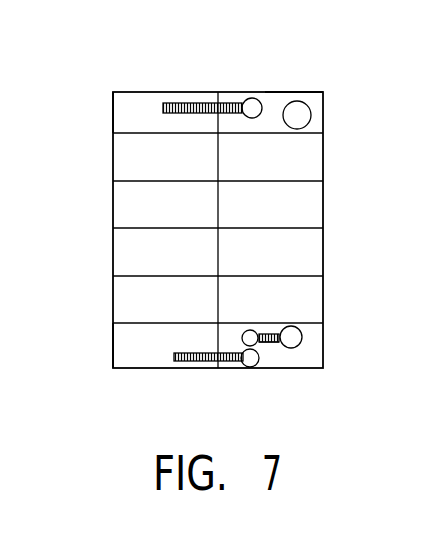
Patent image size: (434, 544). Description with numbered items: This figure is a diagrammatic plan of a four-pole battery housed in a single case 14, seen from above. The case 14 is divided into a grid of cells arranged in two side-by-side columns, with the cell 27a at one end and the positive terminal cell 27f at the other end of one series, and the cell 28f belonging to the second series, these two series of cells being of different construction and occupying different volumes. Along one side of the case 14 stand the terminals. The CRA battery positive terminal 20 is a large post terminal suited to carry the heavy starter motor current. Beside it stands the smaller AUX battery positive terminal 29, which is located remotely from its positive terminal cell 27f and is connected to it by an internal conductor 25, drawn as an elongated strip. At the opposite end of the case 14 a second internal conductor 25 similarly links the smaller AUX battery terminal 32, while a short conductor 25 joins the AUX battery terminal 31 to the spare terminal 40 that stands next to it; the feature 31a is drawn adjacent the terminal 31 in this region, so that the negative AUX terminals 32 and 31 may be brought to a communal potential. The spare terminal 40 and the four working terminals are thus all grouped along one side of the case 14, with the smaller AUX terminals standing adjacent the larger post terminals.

The case 14 is at (323, 208).
The CRA battery positive terminal 20 is at (298, 116).
The internal conductor 25 is at (197, 103).
The cell 27a is at (130, 350).
The positive terminal cell 27f is at (136, 113).
The cell 28f is at (276, 103).
The AUX battery positive terminal 29 is at (250, 98).
The AUX battery terminal 31 is at (291, 339).
The short slot 31a is at (266, 357).
The AUX battery terminal 32 is at (252, 367).
The spare terminal 40 is at (254, 330).